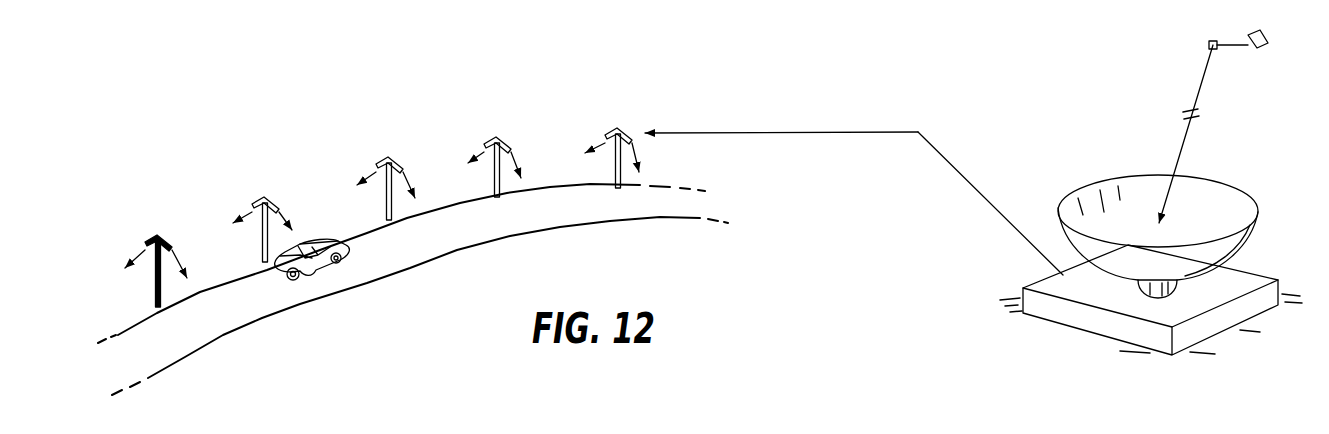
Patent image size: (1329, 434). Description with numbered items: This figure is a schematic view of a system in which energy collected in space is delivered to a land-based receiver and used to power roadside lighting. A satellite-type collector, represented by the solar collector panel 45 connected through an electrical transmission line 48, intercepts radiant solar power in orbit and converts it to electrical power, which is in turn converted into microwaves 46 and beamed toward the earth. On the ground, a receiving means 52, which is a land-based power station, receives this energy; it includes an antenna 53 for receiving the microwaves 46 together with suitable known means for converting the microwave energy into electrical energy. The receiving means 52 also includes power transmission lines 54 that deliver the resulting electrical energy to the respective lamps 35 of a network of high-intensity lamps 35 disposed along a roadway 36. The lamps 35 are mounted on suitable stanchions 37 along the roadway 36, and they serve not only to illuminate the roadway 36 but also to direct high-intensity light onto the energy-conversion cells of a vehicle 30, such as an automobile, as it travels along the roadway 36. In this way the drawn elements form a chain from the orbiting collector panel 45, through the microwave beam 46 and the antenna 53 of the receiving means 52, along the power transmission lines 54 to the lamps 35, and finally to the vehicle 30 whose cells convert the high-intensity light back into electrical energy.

The vehicle 30 is at (319, 237).
The high-intensity lamps 35 is at (158, 238).
The roadway 36 is at (225, 331).
The stanchions 37 is at (155, 292).
The solar collector panel 45 is at (1258, 50).
The microwaves 46 is at (1183, 145).
The electrical transmission line 48 is at (1237, 46).
The receiving means 52 is at (1247, 260).
The antenna 53 is at (1223, 197).
The power transmission lines 54 is at (942, 152).